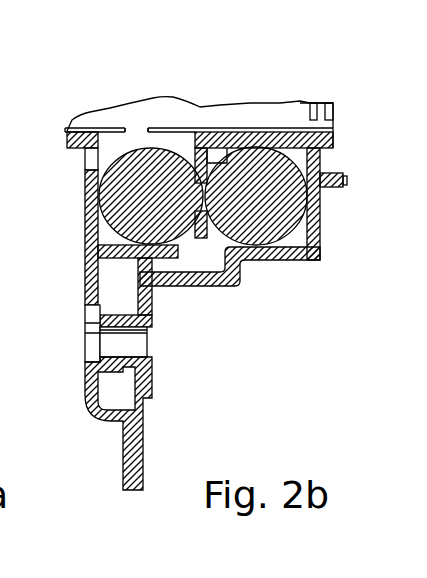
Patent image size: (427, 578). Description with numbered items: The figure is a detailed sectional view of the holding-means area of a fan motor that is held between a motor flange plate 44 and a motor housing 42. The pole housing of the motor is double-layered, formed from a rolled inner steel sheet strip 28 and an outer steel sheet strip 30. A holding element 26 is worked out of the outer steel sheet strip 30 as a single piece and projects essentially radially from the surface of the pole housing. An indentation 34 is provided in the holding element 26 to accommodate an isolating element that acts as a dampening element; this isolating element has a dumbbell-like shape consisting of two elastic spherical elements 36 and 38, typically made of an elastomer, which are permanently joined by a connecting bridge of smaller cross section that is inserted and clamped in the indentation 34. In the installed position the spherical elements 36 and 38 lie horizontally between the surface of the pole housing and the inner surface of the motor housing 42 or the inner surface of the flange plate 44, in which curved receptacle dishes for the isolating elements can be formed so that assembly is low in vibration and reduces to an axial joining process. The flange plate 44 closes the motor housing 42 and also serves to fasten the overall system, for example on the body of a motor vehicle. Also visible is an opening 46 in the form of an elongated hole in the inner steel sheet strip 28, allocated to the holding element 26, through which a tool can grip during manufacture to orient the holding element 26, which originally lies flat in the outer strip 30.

The holding element 26 is at (203, 238).
The steel sheet strip 28 is at (218, 104).
The steel sheet strip 30 is at (283, 103).
The indentation 34 is at (236, 168).
The spherical element 36 is at (277, 232).
The spherical element 38 is at (85, 198).
The motor housing 42 is at (178, 287).
The motor flange plate 44 is at (100, 420).
The opening 46 is at (137, 111).